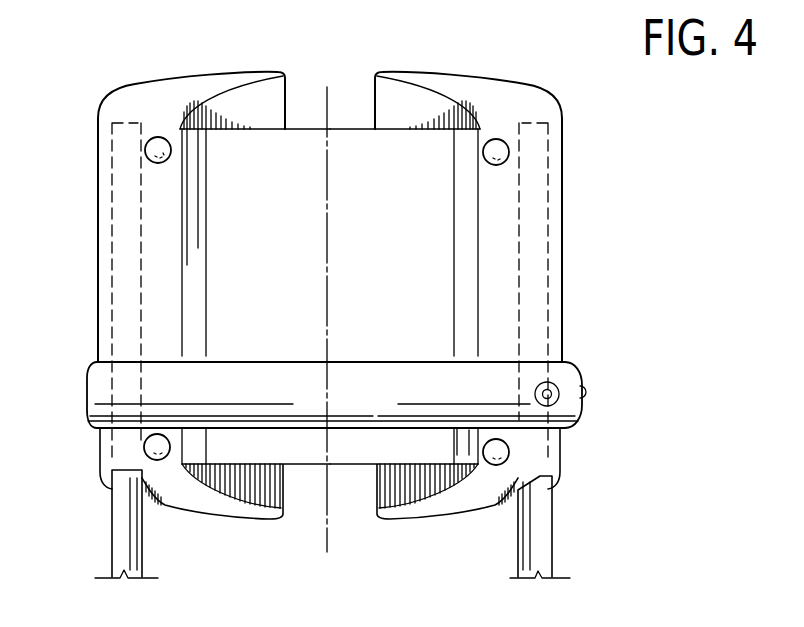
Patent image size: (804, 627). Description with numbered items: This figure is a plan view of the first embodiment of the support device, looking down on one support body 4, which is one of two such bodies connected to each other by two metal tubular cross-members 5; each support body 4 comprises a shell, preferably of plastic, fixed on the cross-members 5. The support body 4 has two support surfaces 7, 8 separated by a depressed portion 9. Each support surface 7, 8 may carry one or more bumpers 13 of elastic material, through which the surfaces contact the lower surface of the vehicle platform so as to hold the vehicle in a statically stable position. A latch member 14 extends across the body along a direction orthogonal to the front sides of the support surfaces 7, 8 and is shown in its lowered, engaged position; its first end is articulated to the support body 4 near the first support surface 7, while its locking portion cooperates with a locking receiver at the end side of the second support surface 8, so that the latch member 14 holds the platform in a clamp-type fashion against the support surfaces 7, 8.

The support body 4 is at (572, 223).
The metal tubular cross-members 5 is at (122, 545).
The first support surface 7 is at (158, 250).
The second support surface 8 is at (495, 328).
The depressed portion 9 is at (402, 273).
The bumpers 13 is at (150, 138).
The latch member 14 is at (183, 383).